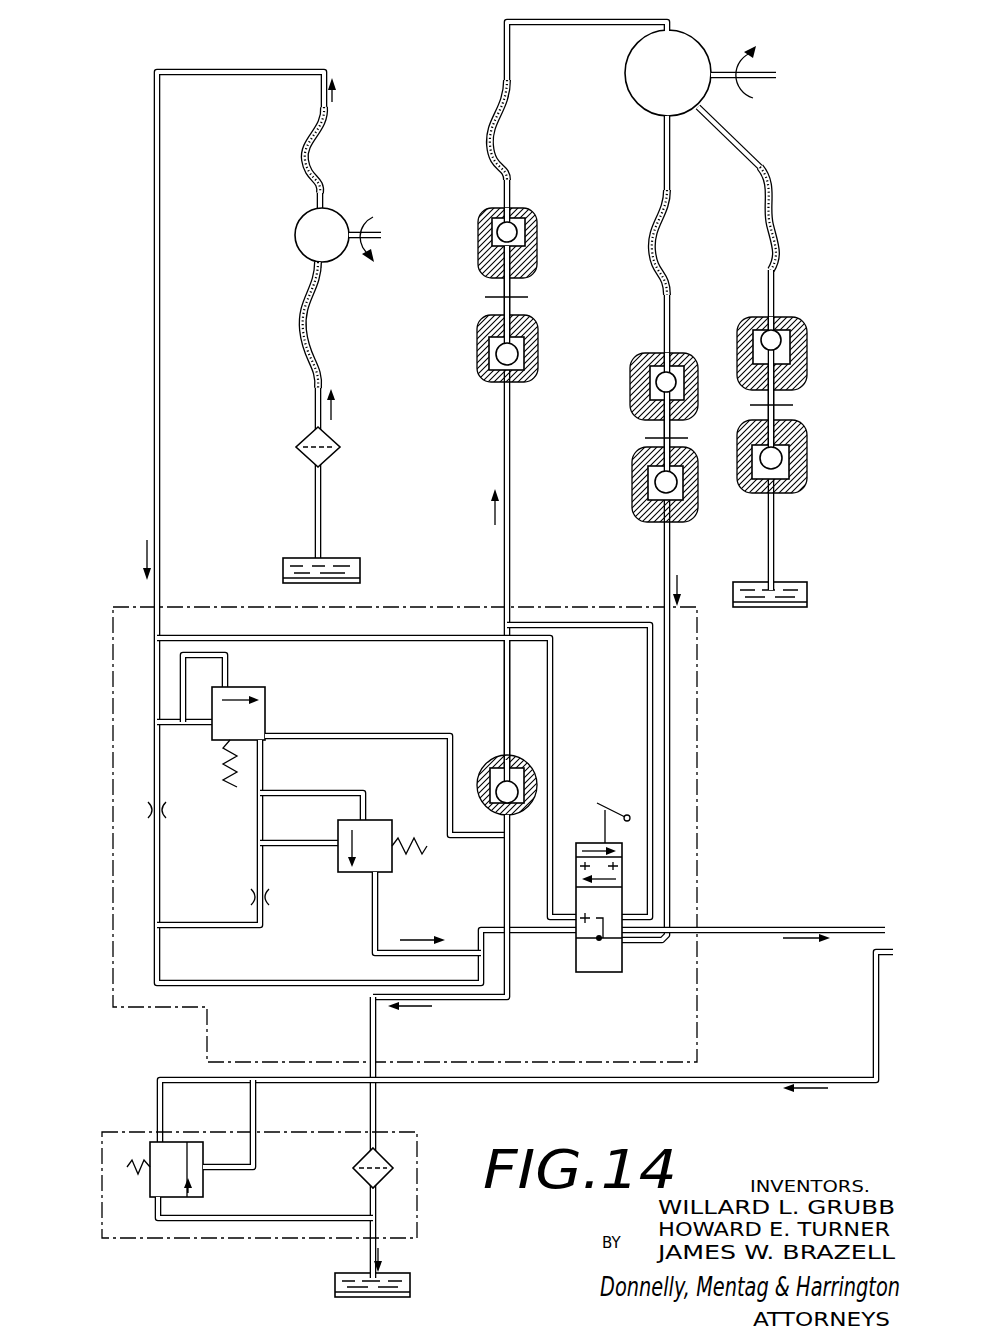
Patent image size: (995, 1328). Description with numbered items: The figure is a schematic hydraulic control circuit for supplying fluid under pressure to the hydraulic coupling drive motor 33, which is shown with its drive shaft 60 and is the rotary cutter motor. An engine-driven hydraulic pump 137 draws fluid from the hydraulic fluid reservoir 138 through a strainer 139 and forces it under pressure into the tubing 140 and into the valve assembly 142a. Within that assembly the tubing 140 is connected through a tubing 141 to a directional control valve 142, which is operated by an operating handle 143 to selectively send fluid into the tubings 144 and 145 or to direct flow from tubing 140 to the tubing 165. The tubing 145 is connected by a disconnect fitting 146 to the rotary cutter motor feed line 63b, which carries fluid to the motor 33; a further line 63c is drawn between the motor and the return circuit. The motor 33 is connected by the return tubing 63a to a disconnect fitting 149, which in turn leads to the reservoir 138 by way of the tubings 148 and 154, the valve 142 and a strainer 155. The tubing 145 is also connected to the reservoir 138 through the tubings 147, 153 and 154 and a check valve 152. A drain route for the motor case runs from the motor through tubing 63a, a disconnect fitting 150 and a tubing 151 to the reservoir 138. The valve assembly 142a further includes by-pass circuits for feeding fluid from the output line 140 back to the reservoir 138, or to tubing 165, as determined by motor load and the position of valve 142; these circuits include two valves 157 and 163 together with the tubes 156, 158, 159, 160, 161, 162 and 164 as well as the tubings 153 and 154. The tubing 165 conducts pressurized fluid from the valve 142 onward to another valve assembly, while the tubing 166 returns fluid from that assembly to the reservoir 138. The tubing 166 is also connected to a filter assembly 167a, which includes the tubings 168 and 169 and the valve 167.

The hydraulic coupling drive motor 33 is at (704, 48).
The drive shaft 60 is at (770, 66).
The return tubing 63a is at (738, 148).
The rotary cutter motor feed line 63b is at (580, 24).
The hose line 63c is at (665, 148).
The hydraulic pump 137 is at (288, 234).
The hydraulic fluid reservoir 138 is at (283, 572).
The strainer 139 is at (308, 440).
The tubing 140 is at (154, 375).
The tubing 141 is at (415, 634).
The directional control valve 142 is at (580, 973).
The valve assembly 142a is at (106, 747).
The operating handle 143 is at (612, 800).
The tubing 144 is at (586, 622).
The tubing 145 is at (510, 540).
The disconnect fitting 146 is at (468, 333).
The tubing 147 is at (503, 682).
The tubing 148 is at (670, 673).
The disconnect fitting 149 is at (622, 405).
The disconnect fitting 150 is at (793, 392).
The tubing 151 is at (778, 544).
The check valve 152 is at (478, 766).
The tubing 153 is at (503, 880).
The tubing 154 is at (377, 1056).
The strainer 155 is at (362, 1180).
The tube 156 is at (194, 724).
The valve 157 is at (273, 716).
The tube 158 is at (230, 668).
The tube 159 is at (378, 740).
The tube 160 is at (262, 768).
The tube 161 is at (350, 792).
The tube 162 is at (288, 847).
The valve 163 is at (349, 880).
The tube 164 is at (370, 928).
The tubing 165 is at (782, 927).
The tubing 166 is at (757, 1078).
The valve 167 is at (210, 1193).
The filter assembly 167a is at (98, 1166).
The tubing 168 is at (256, 1150).
The tubing 169 is at (222, 1222).